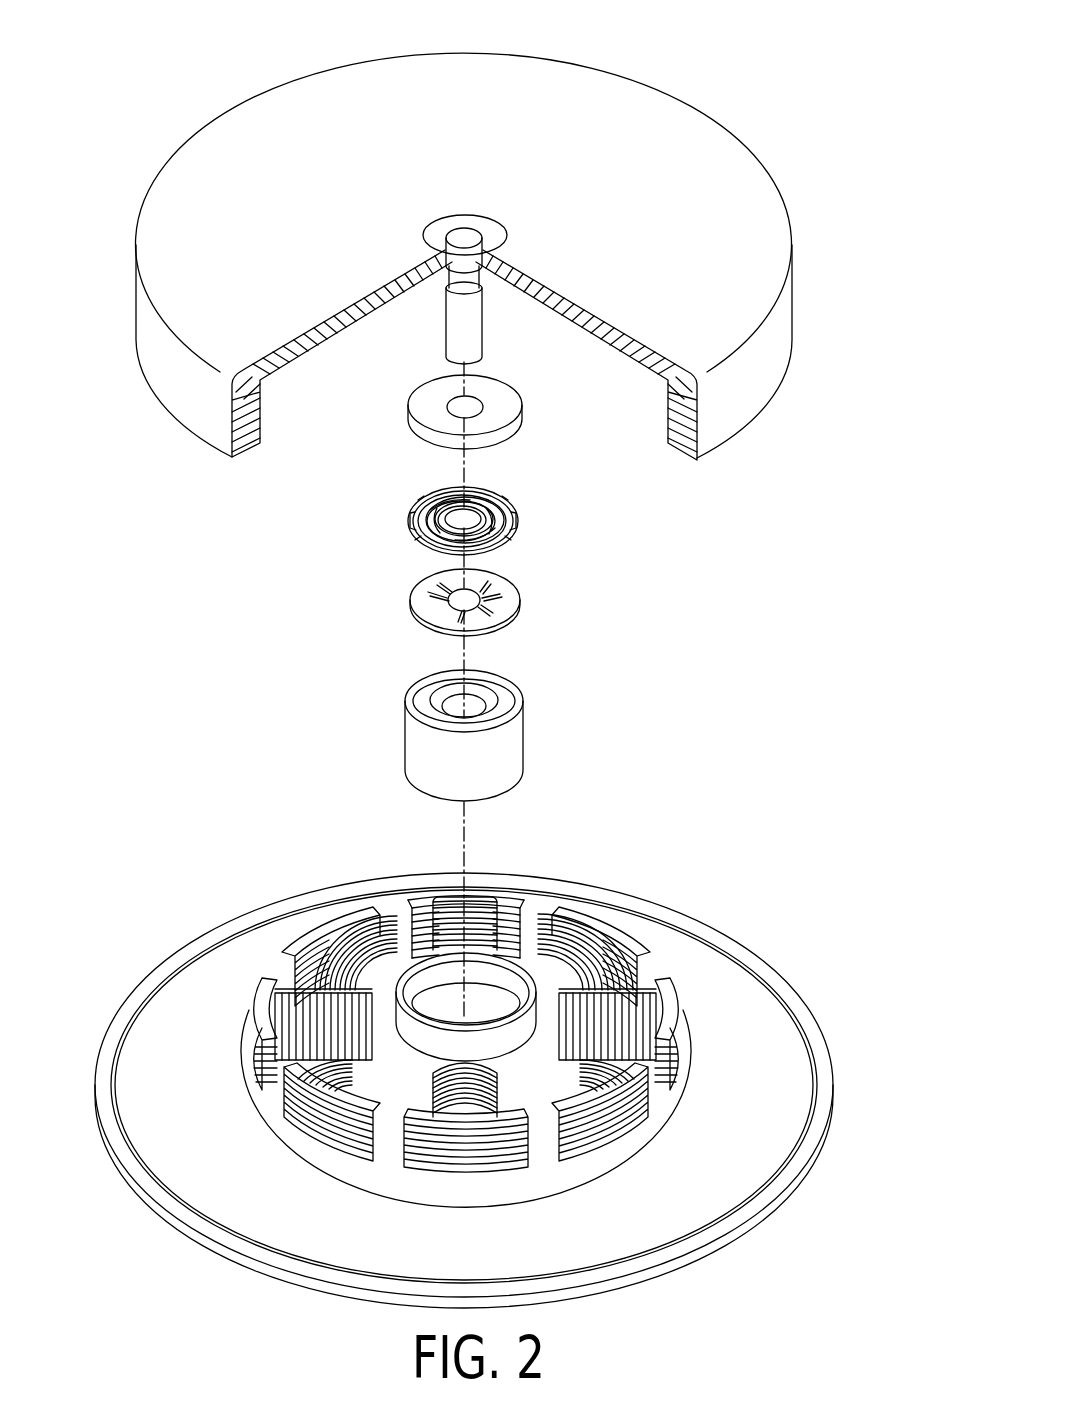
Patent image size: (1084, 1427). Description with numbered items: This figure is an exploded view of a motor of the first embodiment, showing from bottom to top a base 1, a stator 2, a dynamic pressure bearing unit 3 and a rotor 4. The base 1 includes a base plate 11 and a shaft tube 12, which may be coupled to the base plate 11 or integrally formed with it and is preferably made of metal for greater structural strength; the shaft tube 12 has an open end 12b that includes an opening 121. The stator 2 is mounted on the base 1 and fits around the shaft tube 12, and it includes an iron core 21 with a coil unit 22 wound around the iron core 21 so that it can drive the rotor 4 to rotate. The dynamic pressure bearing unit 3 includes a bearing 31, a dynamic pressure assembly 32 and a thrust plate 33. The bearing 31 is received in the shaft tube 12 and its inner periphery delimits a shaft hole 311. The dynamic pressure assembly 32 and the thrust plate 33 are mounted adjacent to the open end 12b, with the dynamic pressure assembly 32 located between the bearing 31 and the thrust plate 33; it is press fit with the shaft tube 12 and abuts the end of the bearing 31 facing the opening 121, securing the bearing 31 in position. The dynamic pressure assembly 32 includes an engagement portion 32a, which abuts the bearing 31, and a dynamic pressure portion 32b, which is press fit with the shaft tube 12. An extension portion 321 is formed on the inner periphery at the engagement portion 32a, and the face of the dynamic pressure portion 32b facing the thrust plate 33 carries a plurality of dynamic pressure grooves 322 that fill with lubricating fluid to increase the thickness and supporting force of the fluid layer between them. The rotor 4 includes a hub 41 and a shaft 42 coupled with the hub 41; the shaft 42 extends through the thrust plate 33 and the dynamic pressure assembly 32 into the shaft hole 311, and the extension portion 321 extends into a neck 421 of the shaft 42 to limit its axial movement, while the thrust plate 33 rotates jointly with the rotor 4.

The base 1 is at (506, 1022).
The base plate 11 is at (756, 952).
The shaft tube 12 is at (434, 935).
The opening 121 is at (497, 968).
The open end 12b is at (422, 933).
The stator 2 is at (517, 954).
The iron core 21 is at (606, 978).
The coil unit 22 is at (582, 942).
The dynamic pressure bearing unit 3 is at (427, 588).
The bearing 31 is at (429, 722).
The shaft hole 311 is at (472, 705).
The dynamic pressure assembly 32 is at (451, 569).
The engagement portion 32a is at (451, 610).
The dynamic pressure portion 32b is at (479, 548).
The extension portion 321 is at (487, 603).
The dynamic pressure grooves 322 is at (519, 530).
The thrust plate 33 is at (408, 430).
The rotor 4 is at (474, 232).
The hub 41 is at (578, 86).
The shaft 42 is at (483, 335).
The neck 421 is at (449, 288).